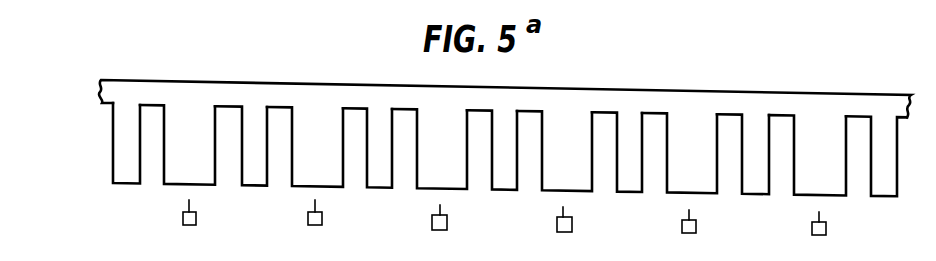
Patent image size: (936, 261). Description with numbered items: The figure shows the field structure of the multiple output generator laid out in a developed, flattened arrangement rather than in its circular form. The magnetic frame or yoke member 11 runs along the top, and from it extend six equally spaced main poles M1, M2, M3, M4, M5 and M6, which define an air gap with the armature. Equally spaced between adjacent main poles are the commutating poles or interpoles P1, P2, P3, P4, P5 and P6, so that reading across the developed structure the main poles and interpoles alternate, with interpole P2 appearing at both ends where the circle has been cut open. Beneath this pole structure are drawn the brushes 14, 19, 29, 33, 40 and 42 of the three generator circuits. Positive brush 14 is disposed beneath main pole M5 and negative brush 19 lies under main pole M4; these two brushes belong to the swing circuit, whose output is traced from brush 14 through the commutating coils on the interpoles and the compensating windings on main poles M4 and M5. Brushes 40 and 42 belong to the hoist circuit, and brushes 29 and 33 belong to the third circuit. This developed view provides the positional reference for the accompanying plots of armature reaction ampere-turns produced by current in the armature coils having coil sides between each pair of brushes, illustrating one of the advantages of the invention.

The magnetic frame or yoke member 11 is at (694, 91).
The interpole P2 is at (111, 183).
The main pole M3 is at (176, 184).
The interpole P3 is at (257, 185).
The main pole M4 is at (306, 186).
The interpole P4 is at (383, 188).
The main pole M5 is at (438, 188).
The interpole P5 is at (507, 190).
The main pole M6 is at (559, 190).
The interpole P6 is at (628, 192).
The main pole M1 is at (686, 193).
The interpole P1 is at (757, 194).
The main pole M2 is at (816, 195).
The brush 40 is at (184, 225).
The negative brush 19 is at (309, 225).
The positive brush 14 is at (433, 229).
The brush 42 is at (558, 231).
The brush 29 is at (683, 232).
The brush 33 is at (813, 235).